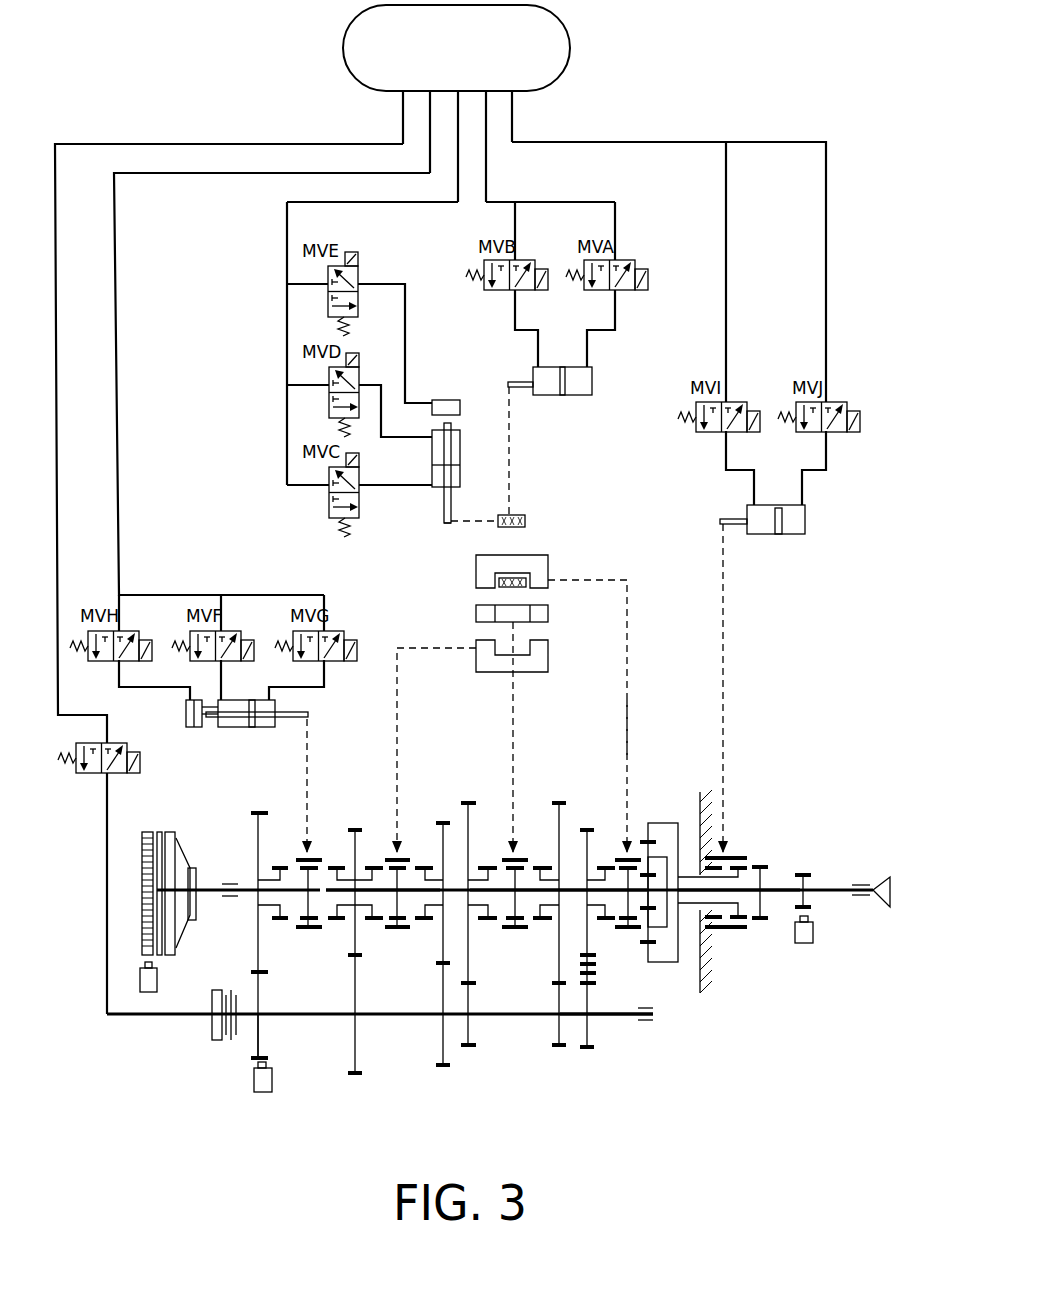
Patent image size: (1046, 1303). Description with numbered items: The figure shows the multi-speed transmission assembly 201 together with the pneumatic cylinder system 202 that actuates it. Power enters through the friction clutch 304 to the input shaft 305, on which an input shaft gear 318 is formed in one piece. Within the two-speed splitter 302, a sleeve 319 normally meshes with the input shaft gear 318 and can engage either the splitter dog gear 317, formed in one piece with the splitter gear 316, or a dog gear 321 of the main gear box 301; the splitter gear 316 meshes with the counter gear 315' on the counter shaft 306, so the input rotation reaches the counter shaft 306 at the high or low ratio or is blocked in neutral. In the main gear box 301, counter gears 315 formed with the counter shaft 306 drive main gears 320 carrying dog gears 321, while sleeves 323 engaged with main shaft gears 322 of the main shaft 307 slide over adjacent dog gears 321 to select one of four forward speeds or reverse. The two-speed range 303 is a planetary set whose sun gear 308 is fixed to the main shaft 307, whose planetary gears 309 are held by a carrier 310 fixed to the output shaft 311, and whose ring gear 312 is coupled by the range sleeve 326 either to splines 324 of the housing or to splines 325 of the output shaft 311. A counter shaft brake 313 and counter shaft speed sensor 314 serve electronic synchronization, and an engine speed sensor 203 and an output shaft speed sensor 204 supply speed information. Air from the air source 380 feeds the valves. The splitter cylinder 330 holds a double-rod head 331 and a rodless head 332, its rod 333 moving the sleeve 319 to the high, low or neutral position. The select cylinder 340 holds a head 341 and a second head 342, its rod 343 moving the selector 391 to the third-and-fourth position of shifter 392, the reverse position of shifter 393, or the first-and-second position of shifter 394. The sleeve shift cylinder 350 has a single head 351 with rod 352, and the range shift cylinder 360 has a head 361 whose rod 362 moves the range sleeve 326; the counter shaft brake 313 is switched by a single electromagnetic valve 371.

The air source 380 is at (573, 41).
The electromagnetic valve 371 is at (87, 773).
The select cylinder 340 is at (450, 434).
The head 341 is at (460, 463).
The head 342 is at (460, 408).
The rod 343 is at (444, 507).
The sleeve shift cylinder 350 is at (566, 418).
The head 351 is at (565, 396).
The rod 352 is at (515, 388).
The range shift cylinder 360 is at (778, 660).
The head 361 is at (778, 535).
The rod 362 is at (722, 519).
The selector 391 is at (520, 515).
The shifter 392 is at (535, 672).
The shifter 393 is at (540, 555).
The shifter 394 is at (476, 605).
The splitter cylinder 330 is at (271, 730).
The head 331 is at (253, 728).
The head 332 is at (194, 728).
The rod 333 is at (300, 710).
The friction clutch 304 is at (182, 826).
The input shaft 305 is at (203, 885).
The sleeve 319 is at (303, 846).
The two-speed splitter 302 is at (342, 812).
The main shaft 307 is at (456, 875).
The main gear box 301 is at (586, 803).
The carrier 310 is at (694, 854).
The two-speed range 303 is at (746, 772).
The splines 324 is at (693, 856).
The range sleeve 326 is at (735, 855).
The splines 325 is at (765, 882).
The pneumatic cylinder system 202 is at (805, 633).
The splitter gear 316 is at (258, 950).
The splitter dog gear 317 is at (280, 922).
The input shaft gear 318 is at (313, 930).
The main gears 320 is at (360, 940).
The dog gears 321 is at (487, 925).
The main shaft gears 322 is at (516, 903).
The sleeves 323 is at (508, 933).
The planetary gears 309 is at (641, 937).
The sun gear 308 is at (652, 896).
The ring gear 312 is at (656, 962).
The output shaft 311 is at (835, 893).
The output shaft speed sensor 204 is at (805, 945).
The engine speed sensor 203 is at (157, 981).
The counter shaft brake 313 is at (224, 1052).
The counter shaft speed sensor 314 is at (265, 1093).
The counter gear 315' is at (291, 1036).
The counter shaft 306 is at (392, 1017).
The counter gears 315 is at (406, 962).
The multi-speed transmission assembly 201 is at (743, 1022).